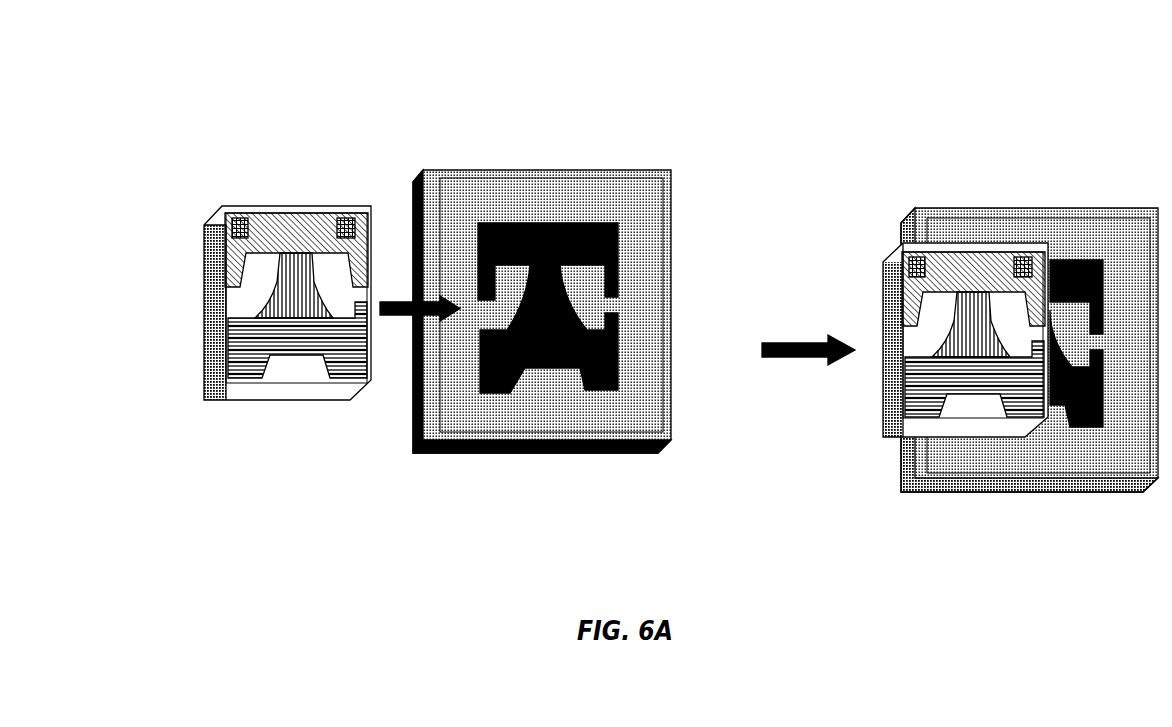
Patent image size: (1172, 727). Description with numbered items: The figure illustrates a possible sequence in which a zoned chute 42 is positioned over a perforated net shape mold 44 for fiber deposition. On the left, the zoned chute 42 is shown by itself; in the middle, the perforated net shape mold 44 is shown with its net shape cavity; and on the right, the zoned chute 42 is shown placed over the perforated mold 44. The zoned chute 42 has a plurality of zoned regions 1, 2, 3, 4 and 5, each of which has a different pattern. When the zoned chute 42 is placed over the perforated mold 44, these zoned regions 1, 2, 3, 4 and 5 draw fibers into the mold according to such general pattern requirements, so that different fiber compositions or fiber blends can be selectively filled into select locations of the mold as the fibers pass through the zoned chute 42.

The zoned chute 42 is at (277, 140).
The perforated net shape mold 44 is at (557, 120).
The zoned region 1 is at (971, 222).
The zoned region 2 is at (1074, 225).
The zoned region 3 is at (973, 288).
The zoned region 4 is at (971, 324).
The zoned region 5 is at (974, 379).